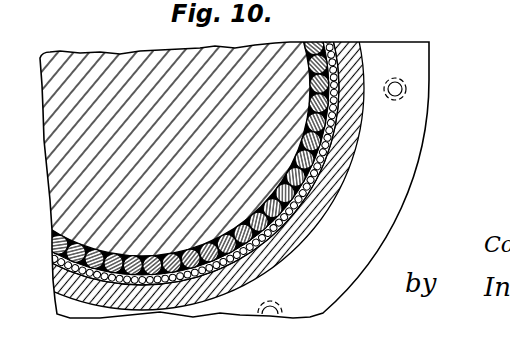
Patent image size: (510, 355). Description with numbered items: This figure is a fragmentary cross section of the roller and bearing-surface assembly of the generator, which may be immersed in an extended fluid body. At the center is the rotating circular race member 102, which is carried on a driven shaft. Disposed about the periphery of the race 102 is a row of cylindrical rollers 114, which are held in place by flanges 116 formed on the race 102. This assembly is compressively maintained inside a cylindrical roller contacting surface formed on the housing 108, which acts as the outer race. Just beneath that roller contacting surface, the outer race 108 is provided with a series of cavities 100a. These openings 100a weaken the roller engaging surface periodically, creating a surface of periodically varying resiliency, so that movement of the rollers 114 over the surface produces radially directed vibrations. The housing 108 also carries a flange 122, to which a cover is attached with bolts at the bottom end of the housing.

The rotating circular race member 102 is at (103, 68).
The flanges 116 is at (310, 112).
The cylindrical rollers 114 is at (302, 150).
The cavities 100a is at (333, 43).
The housing 108 is at (329, 183).
The flange 122 is at (418, 58).